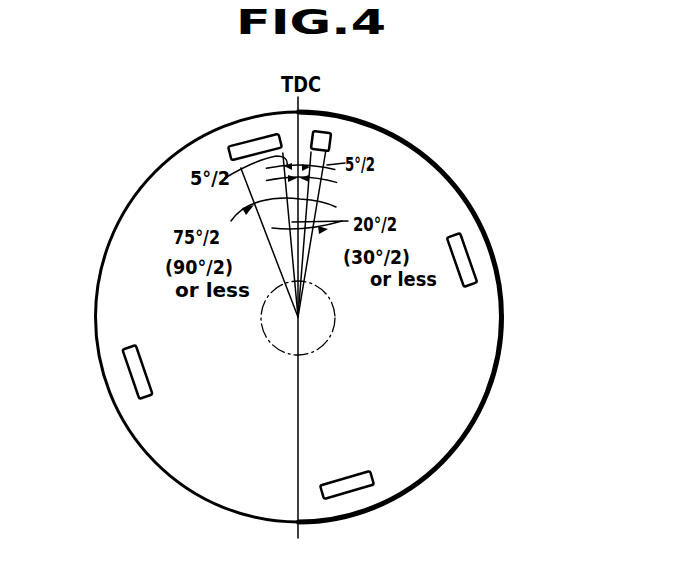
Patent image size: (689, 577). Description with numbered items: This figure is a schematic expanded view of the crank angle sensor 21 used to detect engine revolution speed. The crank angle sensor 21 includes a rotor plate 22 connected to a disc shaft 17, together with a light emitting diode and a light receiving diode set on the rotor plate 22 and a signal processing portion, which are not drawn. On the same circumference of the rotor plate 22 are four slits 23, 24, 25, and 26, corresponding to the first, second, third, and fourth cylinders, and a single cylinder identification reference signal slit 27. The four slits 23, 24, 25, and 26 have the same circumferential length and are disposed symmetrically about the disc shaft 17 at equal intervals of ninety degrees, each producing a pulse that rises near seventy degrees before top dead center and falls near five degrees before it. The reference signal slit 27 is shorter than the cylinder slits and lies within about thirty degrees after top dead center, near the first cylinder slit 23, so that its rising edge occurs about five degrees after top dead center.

The disc shaft 17 is at (328, 342).
The crank angle sensor 21 is at (436, 161).
The rotor plate 22 is at (447, 430).
The first cylinder slit 23 is at (243, 144).
The second cylinder slit 24 is at (465, 259).
The third cylinder slit 25 is at (353, 488).
The fourth cylinder slit 26 is at (130, 363).
The cylinder identification reference signal slit 27 is at (324, 138).